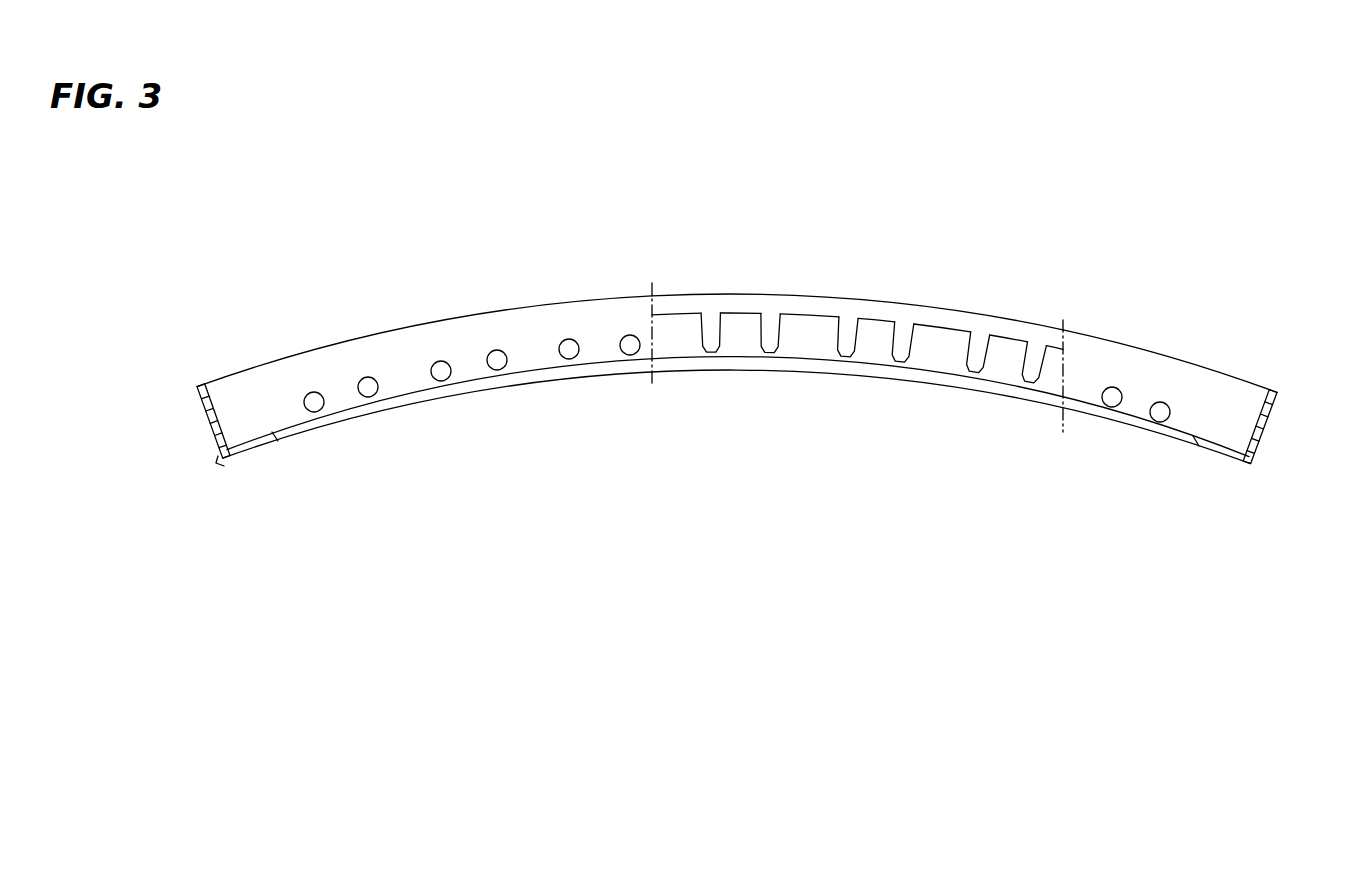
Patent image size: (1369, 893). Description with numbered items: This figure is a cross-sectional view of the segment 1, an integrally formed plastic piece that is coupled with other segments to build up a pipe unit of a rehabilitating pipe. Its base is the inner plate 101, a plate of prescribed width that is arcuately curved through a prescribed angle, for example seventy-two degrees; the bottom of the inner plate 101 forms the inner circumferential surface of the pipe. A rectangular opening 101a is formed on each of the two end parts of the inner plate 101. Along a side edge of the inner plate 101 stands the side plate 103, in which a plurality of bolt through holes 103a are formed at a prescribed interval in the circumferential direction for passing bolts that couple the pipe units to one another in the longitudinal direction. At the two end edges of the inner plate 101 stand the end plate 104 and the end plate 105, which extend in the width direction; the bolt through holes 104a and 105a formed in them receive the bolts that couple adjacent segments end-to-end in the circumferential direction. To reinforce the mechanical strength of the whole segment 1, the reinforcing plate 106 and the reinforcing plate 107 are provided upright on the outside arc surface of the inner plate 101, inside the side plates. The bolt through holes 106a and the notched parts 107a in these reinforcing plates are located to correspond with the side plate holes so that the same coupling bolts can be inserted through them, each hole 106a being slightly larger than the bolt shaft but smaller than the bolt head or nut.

The segment 1 is at (659, 238).
The inner plate 101 is at (803, 373).
The rectangular opening 101a is at (252, 449).
The side plate 103 is at (1197, 388).
The bolt through holes 103a is at (1160, 422).
The end plate 104 is at (197, 393).
The bolt through holes 104a is at (212, 441).
The end plate 105 is at (1278, 393).
The bolt through holes 105a is at (1273, 426).
The reinforcing plate 106 is at (415, 338).
The bolt through holes 106a is at (497, 370).
The reinforcing plate 107 is at (933, 338).
The notched parts 107a is at (770, 346).